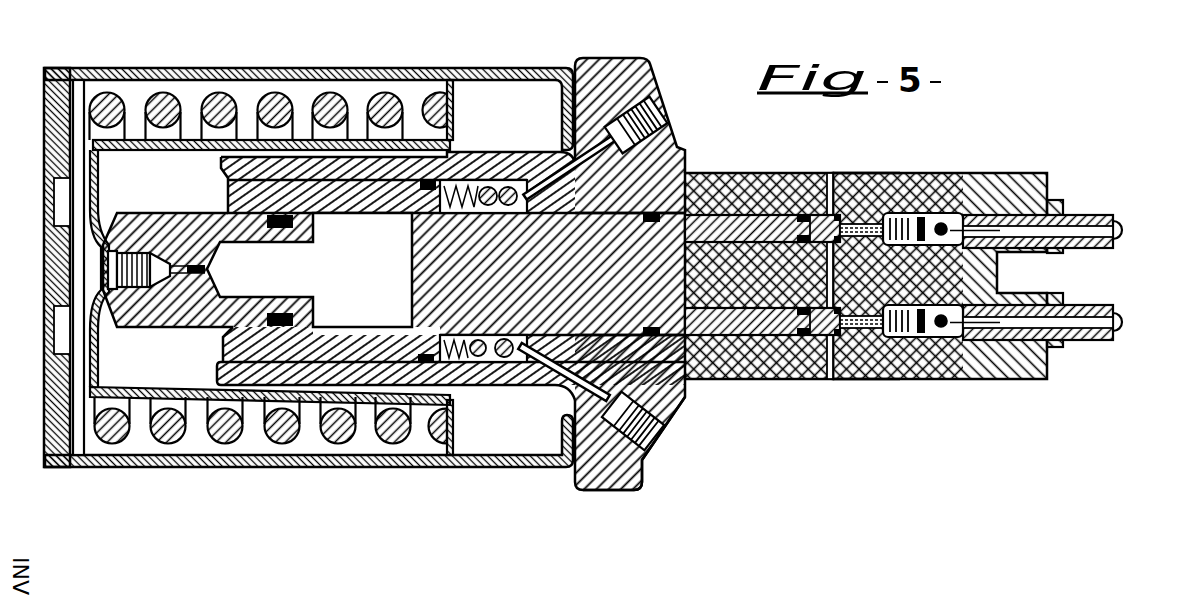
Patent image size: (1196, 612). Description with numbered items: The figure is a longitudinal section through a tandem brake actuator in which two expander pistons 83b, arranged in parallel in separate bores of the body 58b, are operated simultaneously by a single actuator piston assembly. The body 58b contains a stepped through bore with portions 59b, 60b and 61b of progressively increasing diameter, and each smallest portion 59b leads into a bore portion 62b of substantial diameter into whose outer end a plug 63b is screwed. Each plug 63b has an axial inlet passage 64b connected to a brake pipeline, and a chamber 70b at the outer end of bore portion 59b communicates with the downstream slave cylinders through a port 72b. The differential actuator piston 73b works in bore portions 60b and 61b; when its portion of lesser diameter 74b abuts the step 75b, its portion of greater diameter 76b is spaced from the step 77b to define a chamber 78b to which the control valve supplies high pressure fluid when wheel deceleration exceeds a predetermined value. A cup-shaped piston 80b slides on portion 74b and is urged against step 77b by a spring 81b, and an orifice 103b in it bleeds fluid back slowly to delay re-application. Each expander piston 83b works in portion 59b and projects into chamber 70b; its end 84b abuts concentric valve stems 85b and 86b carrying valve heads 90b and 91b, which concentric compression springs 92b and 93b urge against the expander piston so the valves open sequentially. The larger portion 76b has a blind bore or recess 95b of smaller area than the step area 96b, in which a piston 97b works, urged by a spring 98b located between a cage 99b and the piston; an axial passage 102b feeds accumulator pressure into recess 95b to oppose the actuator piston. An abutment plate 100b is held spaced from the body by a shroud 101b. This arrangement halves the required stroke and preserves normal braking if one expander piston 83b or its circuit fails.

The body 58b is at (736, 212).
The smallest diameter bore portion 59b is at (836, 174).
The intermediate bore portion 60b is at (728, 138).
The largest diameter bore portion 61b is at (303, 180).
The bore portion of substantial diameter 62b is at (1047, 290).
The plug 63b is at (1095, 215).
The inlet passage 64b is at (1127, 227).
The chamber 70b is at (878, 173).
The port 72b is at (900, 172).
The differential actuator piston 73b is at (497, 188).
The piston portion of lesser diameter 74b is at (567, 267).
The step 75b is at (688, 270).
The piston portion of greater diameter 76b is at (413, 333).
The step 77b is at (648, 462).
The chamber 78b is at (478, 352).
The cup-shaped piston 80b is at (648, 462).
The spring 81b is at (452, 350).
The expander piston 83b is at (765, 228).
The end of expander piston 84b is at (862, 245).
The inner valve stem 85b is at (905, 250).
The outer valve stem 86b is at (890, 215).
The valve head 90b is at (958, 228).
The valve head 91b is at (942, 230).
The compression spring 92b is at (980, 225).
The compression spring 93b is at (945, 246).
The recess or blind bore 95b is at (373, 243).
The step area 96b is at (458, 180).
The piston 97b is at (165, 252).
The spring 98b is at (332, 116).
The cage 99b is at (253, 405).
The abutment plate 100b is at (83, 457).
The cage or shroud 101b is at (207, 467).
The axial passage 102b is at (128, 290).
The orifice 103b is at (505, 352).